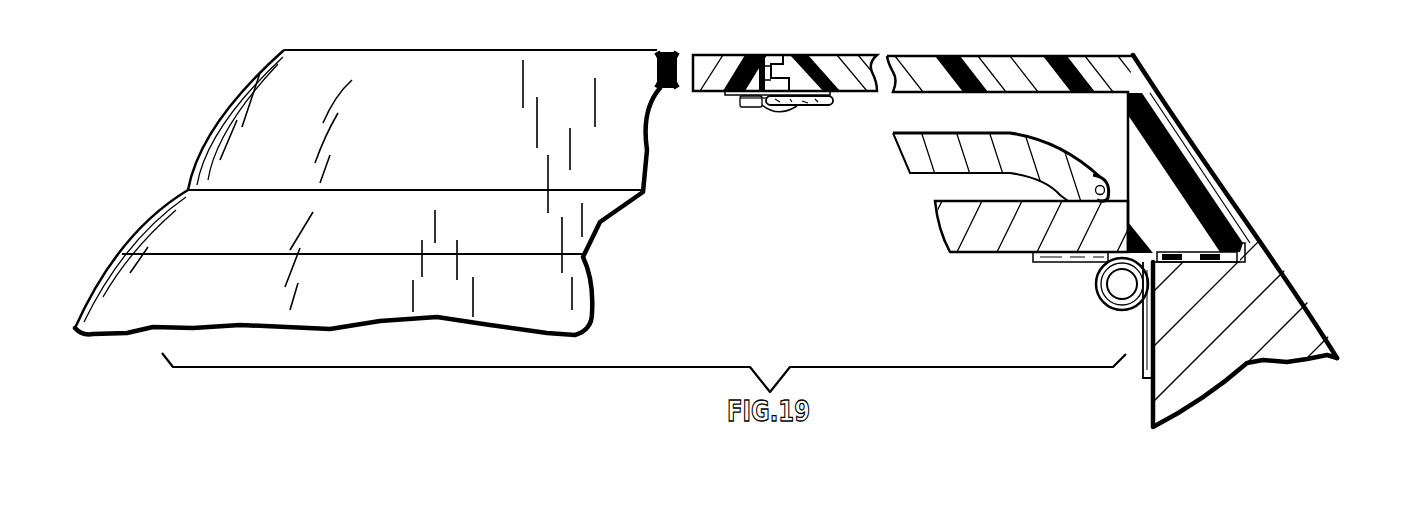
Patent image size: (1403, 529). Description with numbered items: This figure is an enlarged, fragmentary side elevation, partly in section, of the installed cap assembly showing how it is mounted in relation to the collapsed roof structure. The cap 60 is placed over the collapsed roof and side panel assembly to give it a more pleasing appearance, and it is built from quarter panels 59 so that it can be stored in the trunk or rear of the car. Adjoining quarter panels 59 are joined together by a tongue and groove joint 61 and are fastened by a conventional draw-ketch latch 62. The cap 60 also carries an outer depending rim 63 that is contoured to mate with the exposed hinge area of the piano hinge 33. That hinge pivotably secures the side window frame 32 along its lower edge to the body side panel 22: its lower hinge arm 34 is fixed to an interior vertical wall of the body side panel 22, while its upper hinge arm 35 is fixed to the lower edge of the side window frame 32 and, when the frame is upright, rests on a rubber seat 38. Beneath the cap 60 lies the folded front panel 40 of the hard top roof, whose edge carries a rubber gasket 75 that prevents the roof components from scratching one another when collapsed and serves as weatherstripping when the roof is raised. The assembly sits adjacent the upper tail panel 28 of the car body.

The cap 60 is at (203, 112).
The upper tail panel 28 is at (236, 303).
The tongue and groove joint 61 is at (770, 63).
The draw-ketch latch 62 is at (783, 108).
The front panel 40 is at (920, 147).
The rubber gasket 75 is at (1103, 180).
The quarter panel 59 is at (1153, 97).
The outer depending rim 63 is at (1180, 230).
The rubber seat 38 is at (1243, 247).
The body side panel 22 is at (1287, 307).
The side window frame 32 is at (973, 233).
The upper hinge arm 35 is at (1065, 257).
The piano hinge 33 is at (1088, 301).
The lower hinge arm 34 is at (1147, 328).